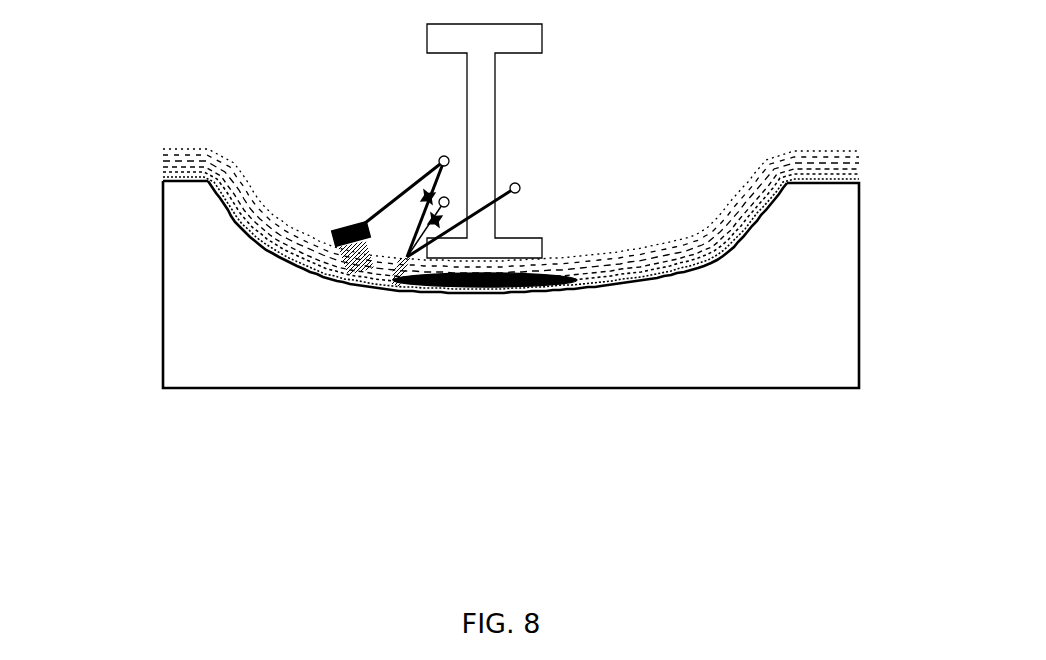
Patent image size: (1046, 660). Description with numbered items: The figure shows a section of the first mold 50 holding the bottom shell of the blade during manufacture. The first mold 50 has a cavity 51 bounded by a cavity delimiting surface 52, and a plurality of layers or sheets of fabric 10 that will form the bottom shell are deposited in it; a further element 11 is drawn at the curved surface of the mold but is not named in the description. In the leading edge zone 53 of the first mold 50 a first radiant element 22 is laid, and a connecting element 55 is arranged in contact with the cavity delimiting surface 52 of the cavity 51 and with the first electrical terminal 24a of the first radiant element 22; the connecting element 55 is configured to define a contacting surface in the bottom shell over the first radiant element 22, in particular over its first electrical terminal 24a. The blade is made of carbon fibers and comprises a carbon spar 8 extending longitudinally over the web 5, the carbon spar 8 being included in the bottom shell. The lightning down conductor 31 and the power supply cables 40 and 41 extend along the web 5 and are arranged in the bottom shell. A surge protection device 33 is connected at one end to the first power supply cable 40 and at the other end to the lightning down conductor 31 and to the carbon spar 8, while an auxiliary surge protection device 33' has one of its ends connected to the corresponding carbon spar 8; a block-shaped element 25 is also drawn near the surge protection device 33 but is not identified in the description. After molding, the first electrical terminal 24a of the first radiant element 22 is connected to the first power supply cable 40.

The web 5 is at (524, 43).
The carbon spar 8 is at (488, 288).
The layers or sheets of fabric 10 is at (223, 160).
The curved surface of substrate cavity 11 is at (758, 213).
The first radiant element 22 is at (190, 158).
The first electrical terminal 24a is at (168, 168).
The light detecting element 25 is at (341, 222).
The lightning down conductor 31 is at (519, 184).
The surge protection device 33 is at (393, 149).
The auxiliary surge protection device 33' is at (388, 170).
The first power supply cable 40 is at (444, 156).
The power supply cable 41 is at (449, 198).
The first mold 50 is at (777, 267).
The cavity 51 is at (660, 210).
The cavity delimiting surface 52 is at (378, 287).
The leading edge zone 53 is at (227, 215).
The connecting element 55 is at (213, 193).